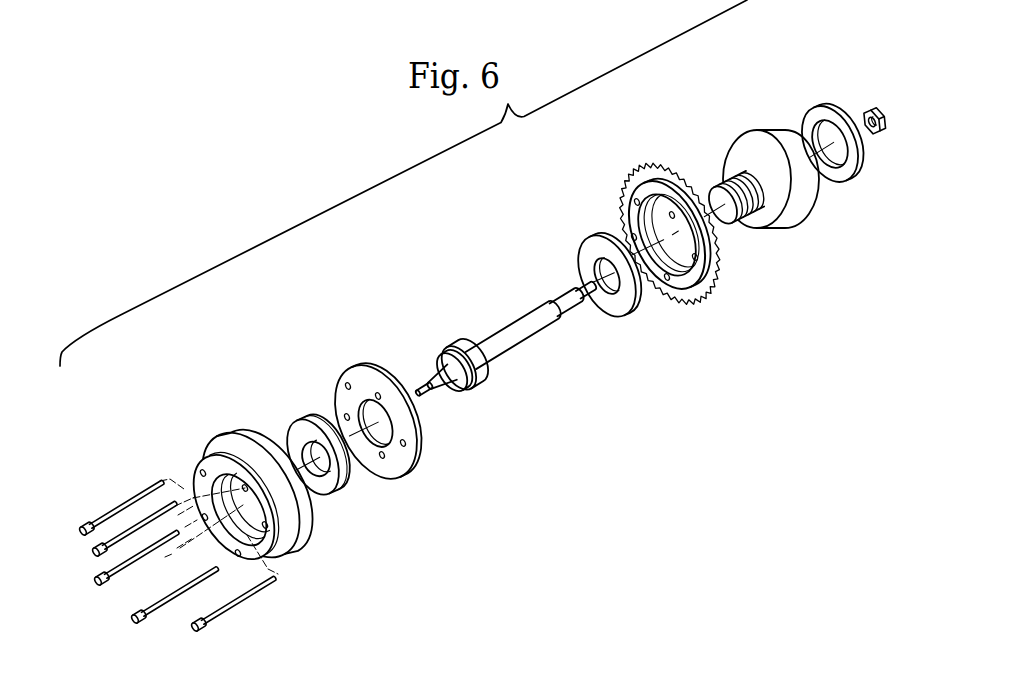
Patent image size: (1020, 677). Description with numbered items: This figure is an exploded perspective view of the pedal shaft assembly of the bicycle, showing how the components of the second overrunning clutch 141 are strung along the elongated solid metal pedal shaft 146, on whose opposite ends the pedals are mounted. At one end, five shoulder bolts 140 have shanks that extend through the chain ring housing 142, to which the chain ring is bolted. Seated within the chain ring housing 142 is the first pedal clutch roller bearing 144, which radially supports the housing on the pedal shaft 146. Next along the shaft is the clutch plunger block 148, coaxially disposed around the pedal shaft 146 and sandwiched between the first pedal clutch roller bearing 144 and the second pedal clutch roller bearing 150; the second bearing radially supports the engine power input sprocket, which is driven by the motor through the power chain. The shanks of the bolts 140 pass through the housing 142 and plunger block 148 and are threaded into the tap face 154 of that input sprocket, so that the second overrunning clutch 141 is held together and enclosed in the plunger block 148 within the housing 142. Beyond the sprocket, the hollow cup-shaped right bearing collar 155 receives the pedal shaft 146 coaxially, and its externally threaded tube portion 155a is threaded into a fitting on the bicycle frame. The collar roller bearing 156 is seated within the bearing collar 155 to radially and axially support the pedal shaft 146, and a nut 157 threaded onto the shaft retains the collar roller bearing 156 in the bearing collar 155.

The shoulder bolts 140 is at (130, 498).
The second overrunning clutch 141 is at (512, 380).
The chain ring housing 142 is at (221, 456).
The first pedal clutch roller bearing 144 is at (302, 420).
The pedal shaft 146 is at (528, 315).
The clutch plunger block 148 is at (365, 367).
The second pedal clutch roller bearing 150 is at (596, 238).
The tap face 154 is at (628, 213).
The bearing collar 155 is at (739, 151).
The tube portion 155a is at (722, 185).
The collar roller bearing 156 is at (813, 105).
The nut 157 is at (863, 108).